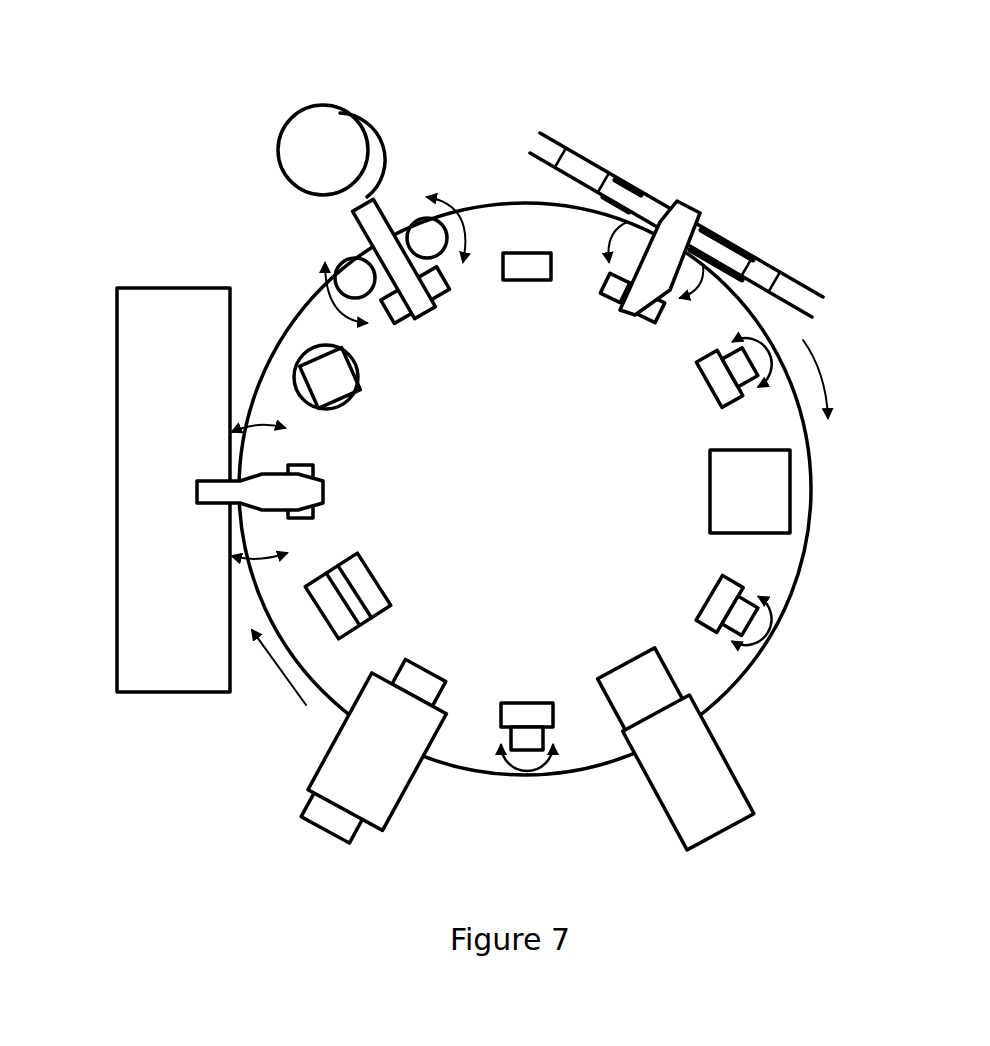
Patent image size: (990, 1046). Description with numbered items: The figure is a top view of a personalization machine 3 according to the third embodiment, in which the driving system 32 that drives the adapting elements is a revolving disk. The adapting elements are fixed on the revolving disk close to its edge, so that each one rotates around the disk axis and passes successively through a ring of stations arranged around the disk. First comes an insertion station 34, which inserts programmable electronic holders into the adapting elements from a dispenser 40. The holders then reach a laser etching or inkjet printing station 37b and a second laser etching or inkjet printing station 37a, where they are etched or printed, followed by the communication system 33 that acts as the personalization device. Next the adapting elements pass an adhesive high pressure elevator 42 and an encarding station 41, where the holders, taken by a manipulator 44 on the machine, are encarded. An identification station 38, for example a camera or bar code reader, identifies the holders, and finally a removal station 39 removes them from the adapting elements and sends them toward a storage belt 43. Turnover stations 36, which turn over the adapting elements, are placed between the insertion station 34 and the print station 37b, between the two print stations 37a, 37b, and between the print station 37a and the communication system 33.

The personalization machine 3 is at (128, 200).
The driving system 32 is at (776, 563).
The communication system 33 is at (360, 770).
The insertion station 34 is at (397, 227).
The turnover stations 36 is at (740, 372).
The laser etching or inkjet printing station 37a is at (695, 778).
The laser etching or inkjet printing station 37b is at (752, 485).
The identification station 38 is at (325, 375).
The removal station 39 is at (660, 247).
The dispenser 40 is at (317, 138).
The encarding station 41 is at (162, 562).
The adhesive high pressure elevator 42 is at (333, 598).
The storage belt 43 is at (762, 270).
The manipulator 44 is at (240, 489).